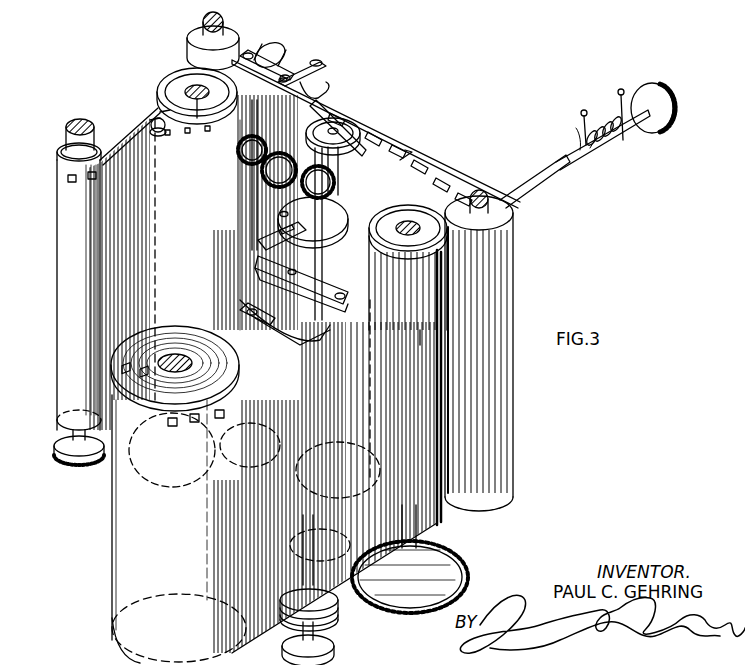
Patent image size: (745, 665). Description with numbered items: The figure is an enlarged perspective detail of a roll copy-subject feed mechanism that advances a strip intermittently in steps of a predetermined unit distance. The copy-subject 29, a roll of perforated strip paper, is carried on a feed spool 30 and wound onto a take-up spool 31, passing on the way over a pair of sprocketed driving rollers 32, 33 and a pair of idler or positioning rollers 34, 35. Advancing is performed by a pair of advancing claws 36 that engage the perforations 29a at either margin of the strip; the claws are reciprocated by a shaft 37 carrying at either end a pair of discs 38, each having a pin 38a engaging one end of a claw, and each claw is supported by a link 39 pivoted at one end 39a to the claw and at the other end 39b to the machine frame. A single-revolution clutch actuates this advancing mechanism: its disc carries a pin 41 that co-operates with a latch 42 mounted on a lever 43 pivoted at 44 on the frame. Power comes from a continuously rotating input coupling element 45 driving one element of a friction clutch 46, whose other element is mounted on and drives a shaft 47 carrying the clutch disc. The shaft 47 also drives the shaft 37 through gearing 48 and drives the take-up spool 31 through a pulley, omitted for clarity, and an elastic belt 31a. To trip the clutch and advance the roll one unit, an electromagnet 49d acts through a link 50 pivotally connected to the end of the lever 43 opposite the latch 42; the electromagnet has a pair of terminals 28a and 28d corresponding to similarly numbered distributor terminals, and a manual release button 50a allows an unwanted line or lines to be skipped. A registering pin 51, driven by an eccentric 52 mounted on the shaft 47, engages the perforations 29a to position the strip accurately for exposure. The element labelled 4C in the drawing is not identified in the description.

The feed spool 30 is at (110, 545).
The take-up spool 31 is at (62, 241).
The elastic belt 31a is at (74, 463).
The sprocketed driving roller 32 is at (408, 206).
The sprocketed driving roller 33 is at (160, 83).
The idler or positioning roller 34 is at (500, 213).
The idler or positioning roller 35 is at (236, 31).
The advancing claw 36 is at (312, 92).
The shaft 37 is at (255, 220).
The disc 38 is at (266, 58).
The pin 38a is at (270, 54).
The link 39 is at (304, 60).
The pivot end 39a is at (212, 88).
The pivot end 39b is at (320, 67).
The pin 41 is at (282, 213).
The latch 42 is at (262, 241).
The lever 43 is at (262, 264).
The pivot 44 is at (297, 268).
The power input coupling element 45 is at (330, 648).
The friction clutch 46 is at (328, 608).
The shaft 47 is at (307, 421).
The gearing 48 is at (300, 185).
The disc 4C is at (318, 224).
The solenoid or electromagnet 49d is at (610, 136).
The link 50 is at (376, 302).
The manual release button 50a is at (672, 105).
The registering pin 51 is at (348, 114).
The eccentric 52 is at (315, 148).
The terminal 28a is at (583, 113).
The terminal 28d is at (620, 90).
The copy-subject 29 is at (382, 152).
The perforations 29a is at (402, 150).